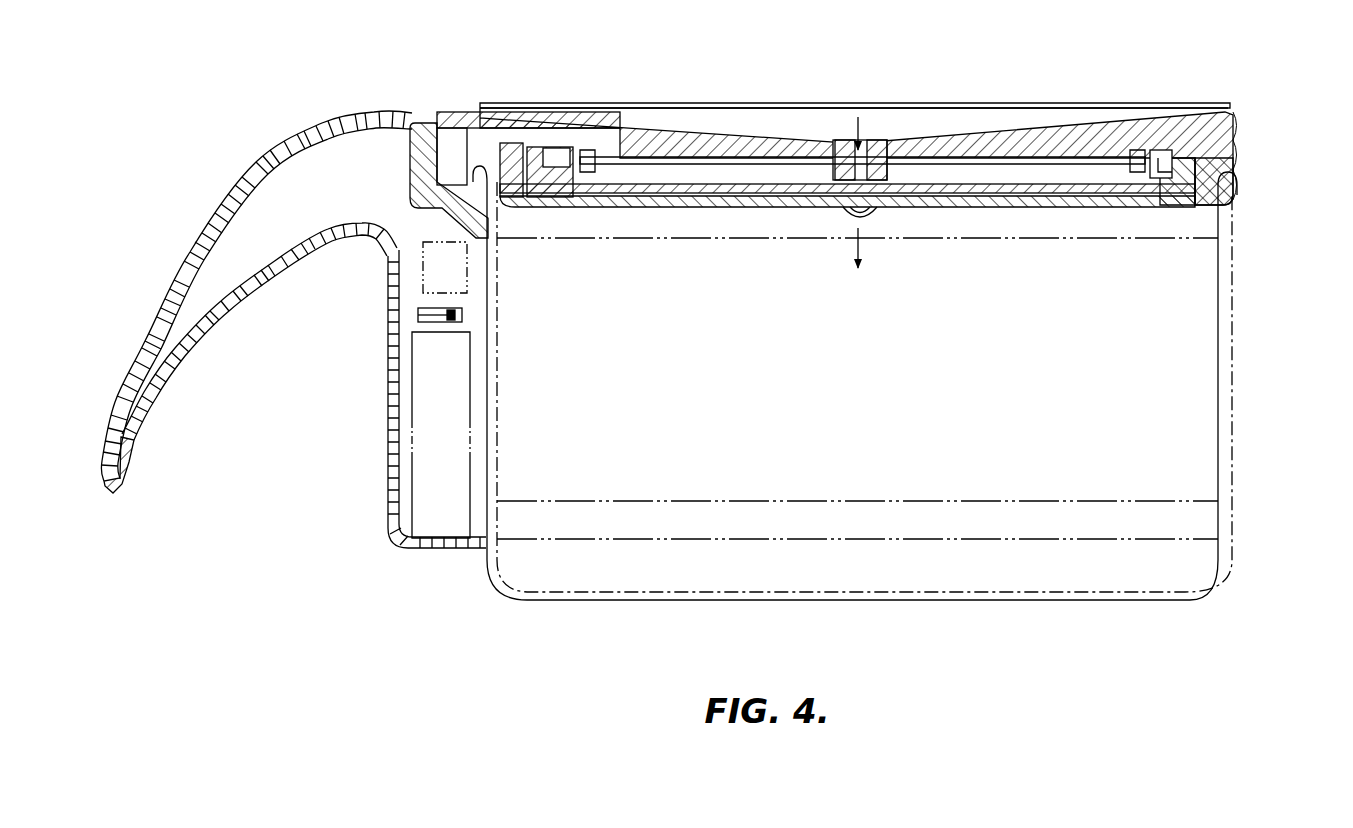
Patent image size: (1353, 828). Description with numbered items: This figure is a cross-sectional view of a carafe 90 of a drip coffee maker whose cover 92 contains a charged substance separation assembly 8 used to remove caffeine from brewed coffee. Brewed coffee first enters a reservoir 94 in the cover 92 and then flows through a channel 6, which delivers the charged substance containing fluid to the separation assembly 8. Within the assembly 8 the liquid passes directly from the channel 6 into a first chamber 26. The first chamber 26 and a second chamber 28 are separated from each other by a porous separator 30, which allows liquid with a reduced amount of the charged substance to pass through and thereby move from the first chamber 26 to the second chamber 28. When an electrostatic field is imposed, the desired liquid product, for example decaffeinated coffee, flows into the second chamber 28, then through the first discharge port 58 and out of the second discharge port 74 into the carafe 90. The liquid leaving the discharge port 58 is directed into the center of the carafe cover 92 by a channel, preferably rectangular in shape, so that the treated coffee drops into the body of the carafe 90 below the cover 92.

The channel 6 is at (868, 140).
The charged substance separation assembly 8 is at (1252, 163).
The first chamber 26 is at (1000, 178).
The second chamber 28 is at (920, 160).
The porous separator 30 is at (1108, 180).
The first discharge port 58 is at (1172, 192).
The second discharge port 74 is at (873, 215).
The carafe 90 is at (1252, 452).
The cover 92 is at (1272, 128).
The reservoir 94 is at (790, 122).